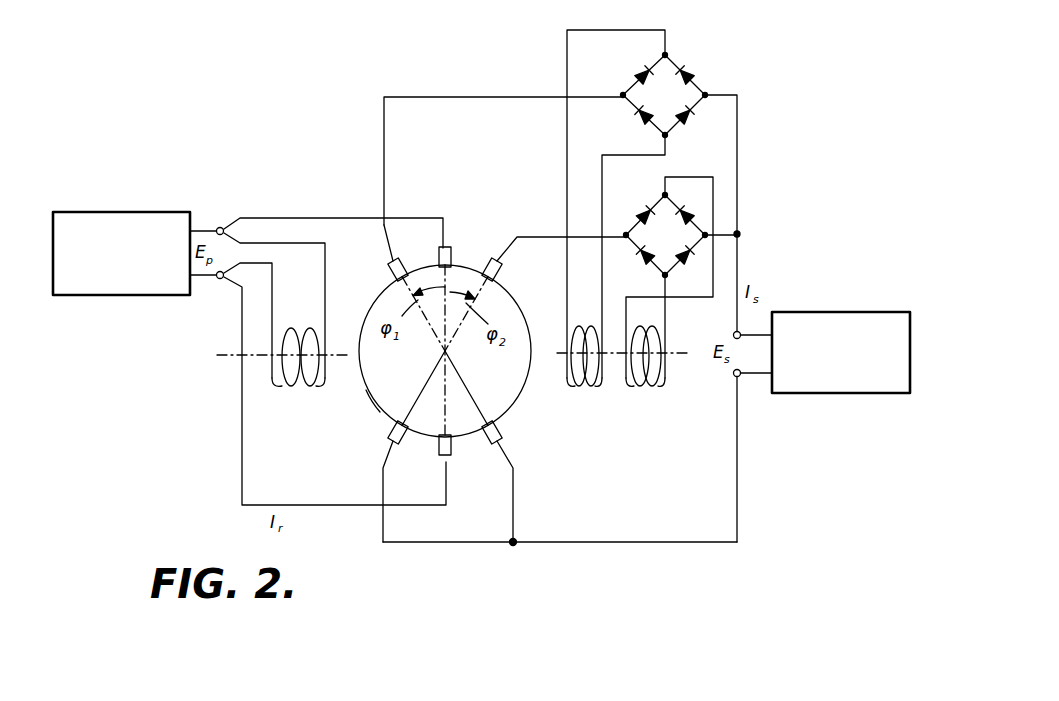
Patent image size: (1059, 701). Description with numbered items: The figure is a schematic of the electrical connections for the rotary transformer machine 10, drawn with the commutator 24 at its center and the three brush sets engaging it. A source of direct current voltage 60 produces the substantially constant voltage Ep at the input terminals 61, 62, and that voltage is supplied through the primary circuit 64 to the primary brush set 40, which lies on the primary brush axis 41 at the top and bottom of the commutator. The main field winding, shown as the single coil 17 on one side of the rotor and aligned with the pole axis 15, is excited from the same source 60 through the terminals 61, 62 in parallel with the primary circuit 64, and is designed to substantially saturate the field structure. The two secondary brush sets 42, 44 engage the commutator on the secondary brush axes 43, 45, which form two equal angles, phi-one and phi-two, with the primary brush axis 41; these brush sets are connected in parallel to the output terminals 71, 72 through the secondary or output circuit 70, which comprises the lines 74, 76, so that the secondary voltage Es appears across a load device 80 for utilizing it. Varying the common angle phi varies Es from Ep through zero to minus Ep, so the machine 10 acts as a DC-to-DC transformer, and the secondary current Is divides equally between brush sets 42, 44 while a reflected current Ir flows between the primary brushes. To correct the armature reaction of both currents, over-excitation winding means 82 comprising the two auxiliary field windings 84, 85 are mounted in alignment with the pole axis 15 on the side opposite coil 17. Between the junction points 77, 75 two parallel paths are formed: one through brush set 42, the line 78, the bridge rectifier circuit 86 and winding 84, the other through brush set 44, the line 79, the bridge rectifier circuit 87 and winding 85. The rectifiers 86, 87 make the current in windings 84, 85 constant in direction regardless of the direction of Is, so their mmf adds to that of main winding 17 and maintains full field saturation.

The machine 10 is at (356, 452).
The pole axis 15 is at (218, 358).
The main field winding 17 is at (298, 388).
The commutator 24 is at (372, 404).
The primary brush set 40 is at (452, 238).
The primary brush axis 41 is at (448, 384).
The secondary brush set 42 is at (380, 258).
The secondary brush axis 43 is at (466, 391).
The secondary brush set 44 is at (492, 253).
The secondary brush axis 45 is at (418, 398).
The source of direct current voltage 60 is at (140, 210).
The input terminal 61 is at (220, 227).
The input terminal 62 is at (220, 279).
The primary circuit 64 is at (300, 212).
The secondary or output circuit 70 is at (752, 484).
The output terminal 71 is at (733, 334).
The output terminal 72 is at (734, 377).
The line 74 is at (740, 268).
The junction point 75 is at (740, 234).
The line 76 is at (740, 430).
The junction point 77 is at (510, 546).
The line 78 is at (504, 94).
The line 79 is at (547, 234).
The load device 80 is at (866, 304).
The over-excitation winding means 82 is at (617, 425).
The auxiliary field winding 84 is at (592, 388).
The auxiliary field winding 85 is at (654, 388).
The bridge rectifier circuit 86 is at (718, 56).
The bridge rectifier circuit 87 is at (692, 188).